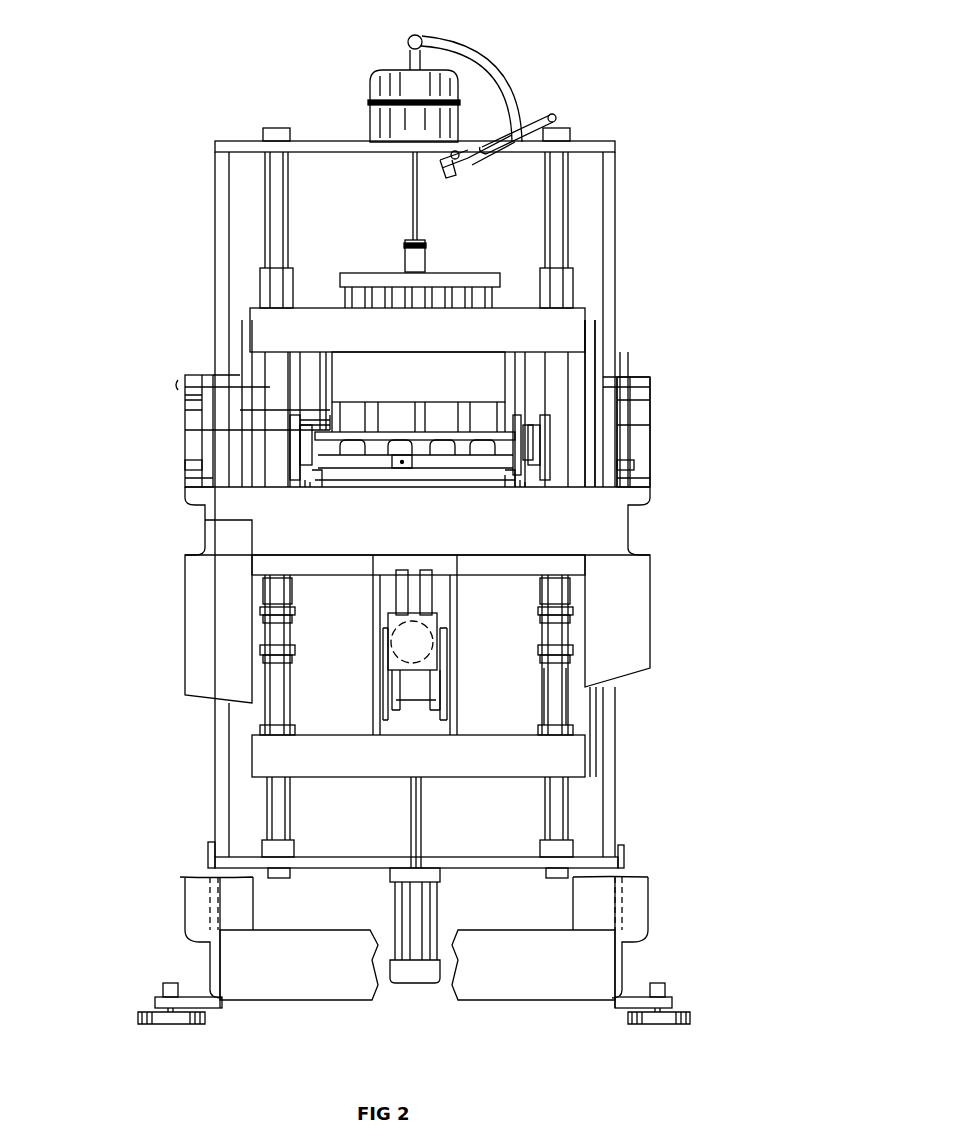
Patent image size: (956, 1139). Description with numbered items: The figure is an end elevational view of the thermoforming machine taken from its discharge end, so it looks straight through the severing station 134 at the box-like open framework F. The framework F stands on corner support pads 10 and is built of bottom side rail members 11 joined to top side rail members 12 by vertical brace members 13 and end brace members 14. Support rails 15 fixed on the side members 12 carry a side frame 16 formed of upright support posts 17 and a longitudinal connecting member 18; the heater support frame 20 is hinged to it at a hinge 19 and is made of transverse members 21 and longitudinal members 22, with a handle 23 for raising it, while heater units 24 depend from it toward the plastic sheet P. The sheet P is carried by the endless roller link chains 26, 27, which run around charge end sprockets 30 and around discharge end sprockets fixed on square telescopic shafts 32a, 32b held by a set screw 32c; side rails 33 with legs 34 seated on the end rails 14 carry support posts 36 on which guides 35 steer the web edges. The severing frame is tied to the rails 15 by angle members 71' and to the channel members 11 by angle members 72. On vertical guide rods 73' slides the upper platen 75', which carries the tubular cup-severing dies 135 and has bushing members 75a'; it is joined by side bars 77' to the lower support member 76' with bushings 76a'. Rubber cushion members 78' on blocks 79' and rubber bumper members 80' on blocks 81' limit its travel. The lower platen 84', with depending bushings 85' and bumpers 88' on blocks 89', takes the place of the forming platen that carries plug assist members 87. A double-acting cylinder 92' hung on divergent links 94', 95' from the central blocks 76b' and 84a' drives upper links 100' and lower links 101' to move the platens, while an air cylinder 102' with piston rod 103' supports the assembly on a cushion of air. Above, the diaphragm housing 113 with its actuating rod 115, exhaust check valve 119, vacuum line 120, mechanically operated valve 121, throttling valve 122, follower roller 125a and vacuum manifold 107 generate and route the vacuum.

The corner support pads 10 is at (160, 1025).
The bottom side rail members 11 is at (210, 960).
The top side rail members 12 is at (205, 510).
The vertical brace members 13 is at (195, 652).
The end brace members 14 is at (225, 522).
The support rails 15 is at (190, 487).
The frame 16 is at (648, 368).
The upright support posts 17 is at (185, 412).
The longitudinal connecting member 18 is at (185, 400).
The hinge 19 is at (650, 392).
The heater support frame 20 is at (197, 375).
The transverse members 21 is at (620, 380).
The longitudinal members 22 is at (213, 378).
The handle 23 is at (178, 386).
The heater units 24 is at (240, 420).
The endless roller link chain 26 is at (318, 487).
The endless roller link chain 27 is at (512, 487).
The charge end sprockets 30 is at (305, 487).
The telescopic shaft 32a is at (358, 470).
The telescopic shaft 32b is at (448, 470).
The set screw 32c is at (402, 470).
The side rails 33 is at (292, 455).
The legs 34 is at (305, 470).
The guides 35 is at (515, 425).
The support posts 36 is at (330, 420).
The angle members 71' is at (423, 462).
The angle members 72 is at (208, 852).
The vertical guide rods 73' is at (460, 472).
The upper platen 75' is at (456, 322).
The bushing members 75a' is at (416, 271).
The lower support member 76' is at (517, 704).
The bushing members 76a' is at (416, 655).
The central block 76b' is at (418, 757).
The side bars 77' is at (649, 564).
The rubber cushion members 78' is at (417, 808).
The blocks 79' is at (417, 859).
The rubber bumper members 80' is at (445, 671).
The blocks 81' is at (446, 656).
The lower platen 84' is at (440, 553).
The central block 84a' is at (415, 631).
The bushings 85' is at (445, 592).
The plug assist members 87 is at (356, 440).
The rubber bumper members 88' is at (444, 616).
The blocks 89' is at (448, 631).
The double-acting pressure fluid actuated cylinder 92' is at (453, 641).
The divergent link 94' is at (450, 655).
The divergent link 95' is at (476, 674).
The upper links 100' is at (440, 569).
The lower links 101' is at (406, 724).
The air cylinder 102' is at (419, 952).
The piston rod 103' is at (450, 822).
The vacuum manifold 107 is at (365, 278).
The diaphragm housing 113 is at (380, 80).
The diaphragm actuating rod 115 is at (418, 220).
The exhaust check valve 119 is at (422, 40).
The vacuum line 120 is at (508, 88).
The mechanically operated valve 121 is at (505, 160).
The dial cock throttling valve 122 is at (455, 165).
The follower roller 125a is at (560, 118).
The severing station 134 is at (598, 336).
The cup-severing dies 135 is at (398, 400).
The framework F is at (650, 648).
The plastic sheet P is at (318, 420).